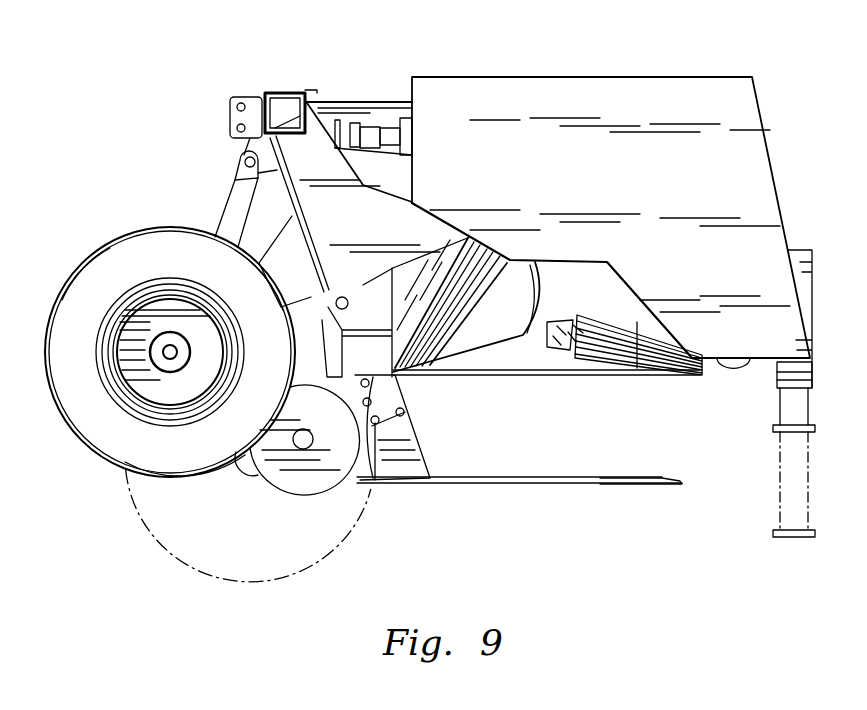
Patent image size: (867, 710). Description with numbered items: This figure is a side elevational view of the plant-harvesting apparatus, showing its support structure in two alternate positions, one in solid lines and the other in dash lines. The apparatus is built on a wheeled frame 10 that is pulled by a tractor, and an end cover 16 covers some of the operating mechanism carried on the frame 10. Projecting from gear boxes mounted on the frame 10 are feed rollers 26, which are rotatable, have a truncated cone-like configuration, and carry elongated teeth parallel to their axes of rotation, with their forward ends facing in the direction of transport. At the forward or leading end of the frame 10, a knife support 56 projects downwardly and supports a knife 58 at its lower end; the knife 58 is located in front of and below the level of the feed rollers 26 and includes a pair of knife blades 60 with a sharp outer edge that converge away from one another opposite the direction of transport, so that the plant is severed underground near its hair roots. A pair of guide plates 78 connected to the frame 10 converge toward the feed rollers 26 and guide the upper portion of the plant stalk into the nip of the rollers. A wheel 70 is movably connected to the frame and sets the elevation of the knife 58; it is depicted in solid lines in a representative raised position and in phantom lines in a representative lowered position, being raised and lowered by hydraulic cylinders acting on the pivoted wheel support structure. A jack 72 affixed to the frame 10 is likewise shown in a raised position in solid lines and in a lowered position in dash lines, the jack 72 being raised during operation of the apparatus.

The wheeled frame 10 is at (340, 115).
The end cover 16 is at (647, 103).
The feed roller 26 is at (597, 342).
The knife support 56 is at (402, 442).
The knife 58 is at (522, 487).
The knife blade 60 is at (637, 485).
The wheel 70 is at (120, 252).
The jack 72 is at (788, 417).
The guide plate 78 is at (540, 268).